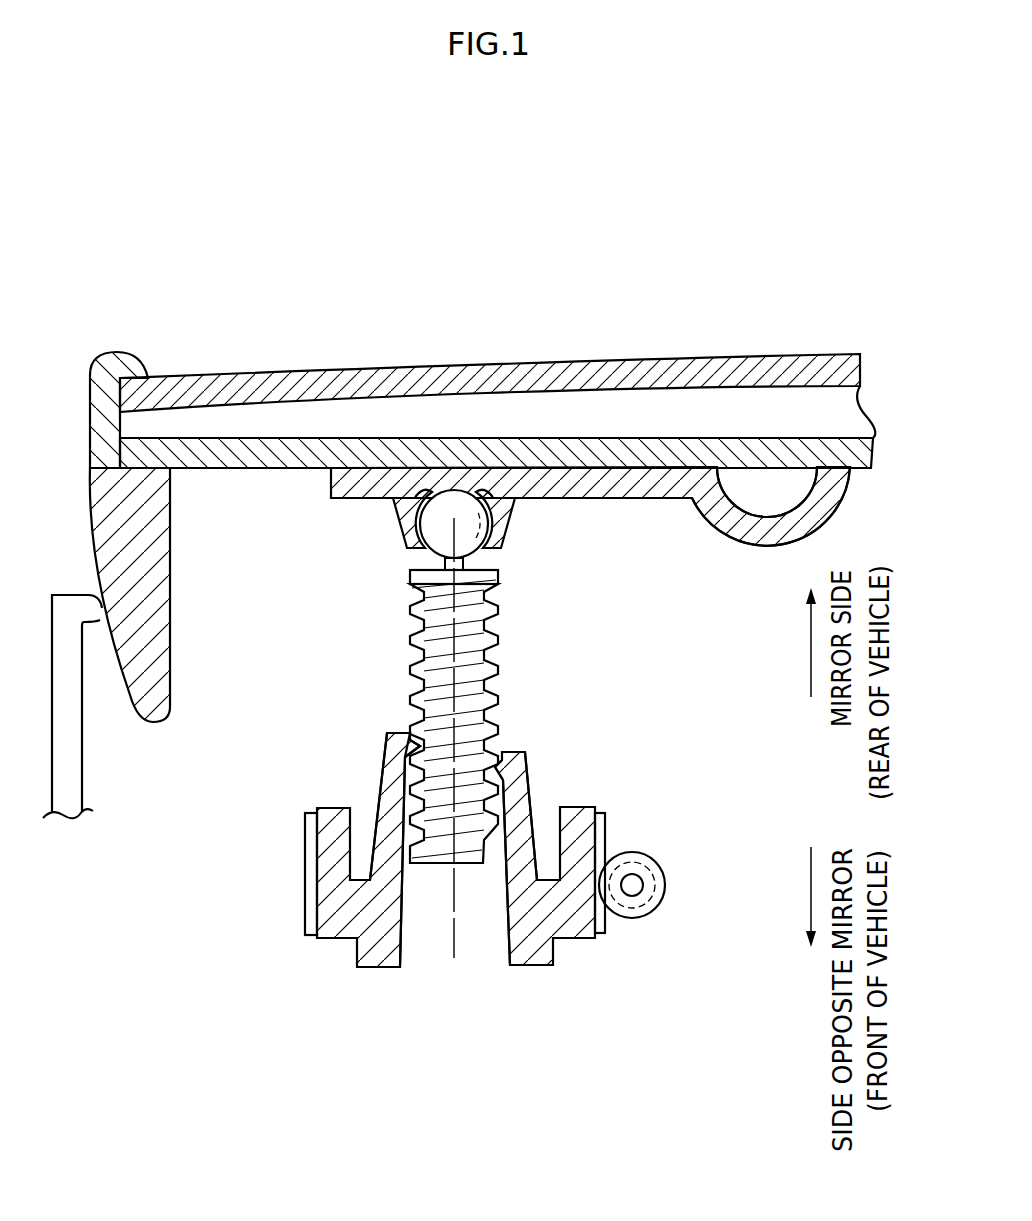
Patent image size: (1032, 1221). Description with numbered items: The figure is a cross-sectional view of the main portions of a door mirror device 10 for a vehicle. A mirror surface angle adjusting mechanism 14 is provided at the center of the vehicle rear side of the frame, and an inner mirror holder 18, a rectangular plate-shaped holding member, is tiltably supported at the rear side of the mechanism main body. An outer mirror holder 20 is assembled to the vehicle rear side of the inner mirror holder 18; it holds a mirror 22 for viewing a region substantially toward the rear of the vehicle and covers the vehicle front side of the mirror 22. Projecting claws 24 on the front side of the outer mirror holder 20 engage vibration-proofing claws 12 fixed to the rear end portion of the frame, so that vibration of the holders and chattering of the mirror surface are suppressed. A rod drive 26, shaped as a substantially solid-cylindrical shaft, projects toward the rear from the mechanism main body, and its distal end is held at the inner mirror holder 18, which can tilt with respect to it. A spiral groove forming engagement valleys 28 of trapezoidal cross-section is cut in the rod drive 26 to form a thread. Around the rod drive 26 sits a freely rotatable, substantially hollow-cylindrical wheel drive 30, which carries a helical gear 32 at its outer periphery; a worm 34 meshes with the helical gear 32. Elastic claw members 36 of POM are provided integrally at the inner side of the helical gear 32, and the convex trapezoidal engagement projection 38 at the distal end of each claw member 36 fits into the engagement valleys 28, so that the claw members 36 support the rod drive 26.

The door mirror device for a vehicle 10 is at (570, 175).
The vibration-proofing claw 12 is at (80, 706).
The mirror surface angle adjusting mechanism 14 is at (840, 515).
The inner mirror holder 18 is at (640, 500).
The outer mirror holder 20 is at (280, 462).
The mirror 22 is at (504, 364).
The projecting claw 24 is at (170, 606).
The rod drive 26 is at (516, 568).
The engagement valley 28 is at (495, 626).
The wheel drive 30 is at (329, 800).
The helical gear 32 is at (305, 872).
The worm 34 is at (666, 893).
The claw member 36 is at (381, 788).
The engagement projection 38 is at (412, 742).